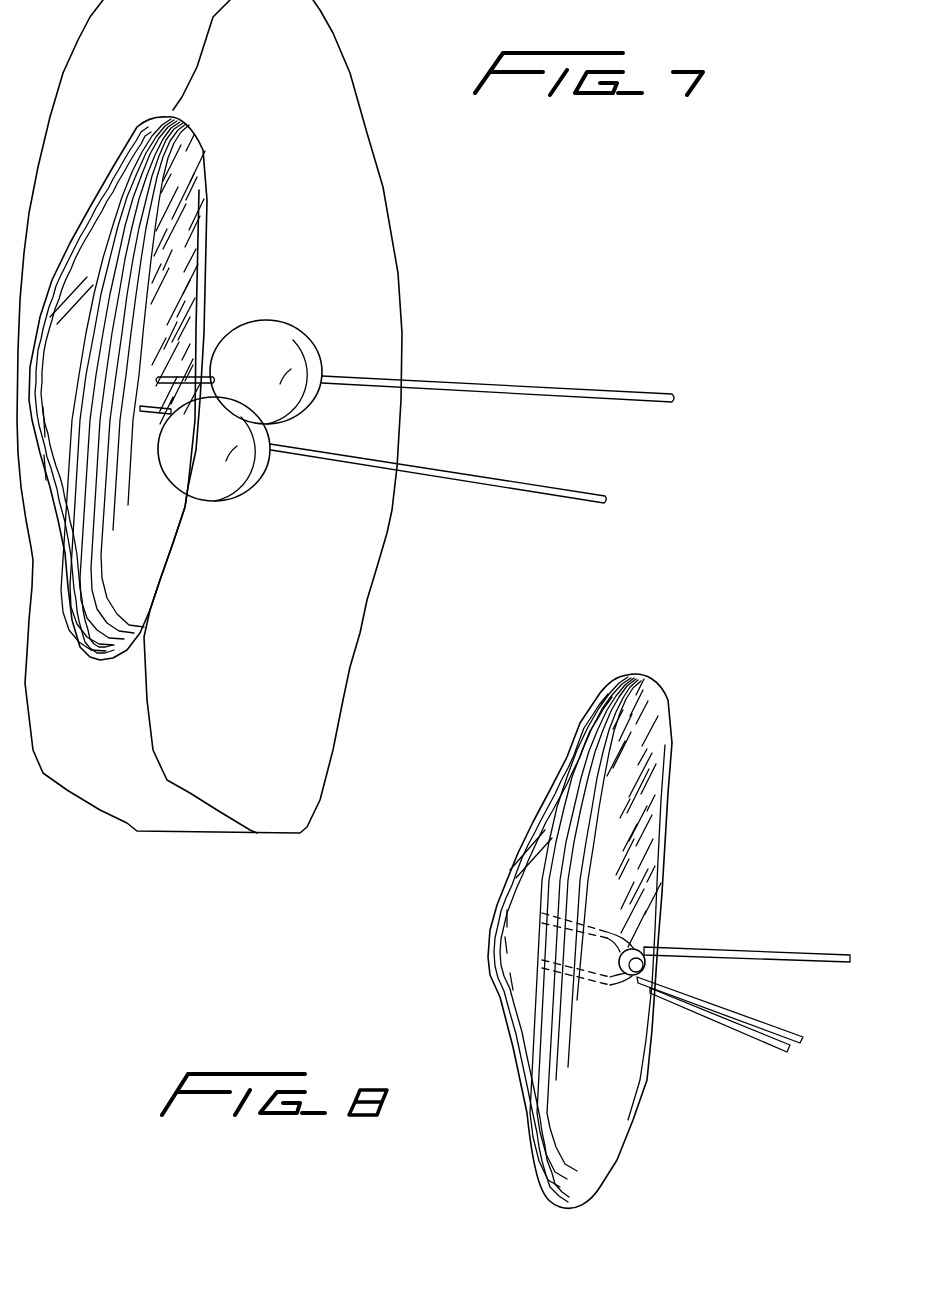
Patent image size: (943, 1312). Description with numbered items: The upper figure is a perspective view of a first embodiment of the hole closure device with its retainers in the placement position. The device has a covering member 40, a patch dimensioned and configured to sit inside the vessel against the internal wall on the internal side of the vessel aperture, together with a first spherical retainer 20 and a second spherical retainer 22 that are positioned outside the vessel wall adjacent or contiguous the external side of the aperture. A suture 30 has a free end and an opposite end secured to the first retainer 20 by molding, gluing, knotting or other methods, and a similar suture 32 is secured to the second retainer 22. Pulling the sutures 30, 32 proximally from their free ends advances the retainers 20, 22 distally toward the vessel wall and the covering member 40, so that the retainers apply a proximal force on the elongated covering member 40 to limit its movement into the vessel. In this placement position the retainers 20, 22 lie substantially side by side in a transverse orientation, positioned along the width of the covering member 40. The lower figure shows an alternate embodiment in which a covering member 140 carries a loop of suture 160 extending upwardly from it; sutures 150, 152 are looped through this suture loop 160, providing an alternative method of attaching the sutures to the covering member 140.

In FIG. 7, the covering member 40 is at (200, 150).
In FIG. 7, the first spherical retainer 20 is at (262, 337).
In FIG. 7, the second spherical retainer 22 is at (220, 478).
In FIG. 7, the suture 30 is at (460, 386).
In FIG. 7, the suture 32 is at (450, 486).
In FIG. 8, the covering member 140 is at (602, 793).
In FIG. 8, the suture 150 is at (728, 1018).
In FIG. 8, the suture 152 is at (763, 1013).
In FIG. 8, the loop of suture 160 is at (640, 945).